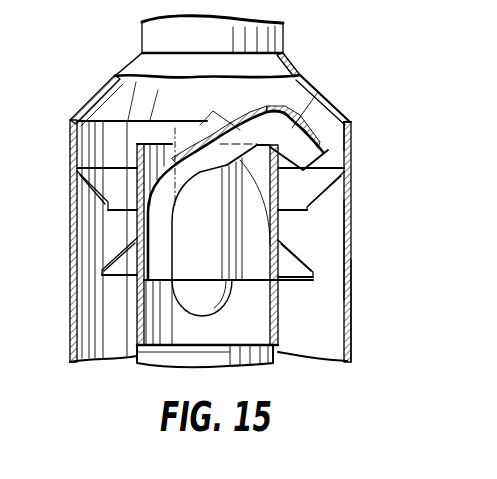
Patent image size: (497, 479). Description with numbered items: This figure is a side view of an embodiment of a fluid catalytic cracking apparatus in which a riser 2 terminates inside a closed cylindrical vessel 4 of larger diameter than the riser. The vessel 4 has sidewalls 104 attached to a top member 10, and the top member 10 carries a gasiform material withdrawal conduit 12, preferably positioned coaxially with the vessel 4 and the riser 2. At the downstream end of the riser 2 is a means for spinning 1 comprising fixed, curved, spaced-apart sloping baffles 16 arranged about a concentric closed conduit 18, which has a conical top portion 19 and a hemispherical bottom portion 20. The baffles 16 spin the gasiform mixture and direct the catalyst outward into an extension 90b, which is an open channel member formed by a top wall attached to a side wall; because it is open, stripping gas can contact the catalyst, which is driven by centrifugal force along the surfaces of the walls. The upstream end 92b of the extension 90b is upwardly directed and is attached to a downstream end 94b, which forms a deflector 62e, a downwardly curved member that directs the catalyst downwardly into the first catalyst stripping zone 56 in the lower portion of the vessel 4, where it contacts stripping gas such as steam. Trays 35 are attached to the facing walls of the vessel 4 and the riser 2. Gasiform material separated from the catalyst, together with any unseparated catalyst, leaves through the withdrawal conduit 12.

The means for spinning 1 is at (140, 150).
The riser 2 is at (330, 345).
The closed cylindrical vessel 4 is at (352, 294).
The top member 10 is at (318, 92).
The gasiform material withdrawal conduit 12 is at (284, 37).
The baffles 16 is at (168, 146).
The concentric closed conduit 18 is at (275, 243).
The conical top portion 19 is at (193, 128).
The hemispherical bottom portion 20 is at (218, 298).
The trays 35 is at (78, 190).
The first catalyst stripping zone 56 is at (333, 245).
The deflector 62e is at (328, 103).
The extension 90b is at (274, 124).
The upstream end 92b is at (244, 124).
The downstream end 94b is at (351, 136).
The sidewalls 104 is at (352, 257).